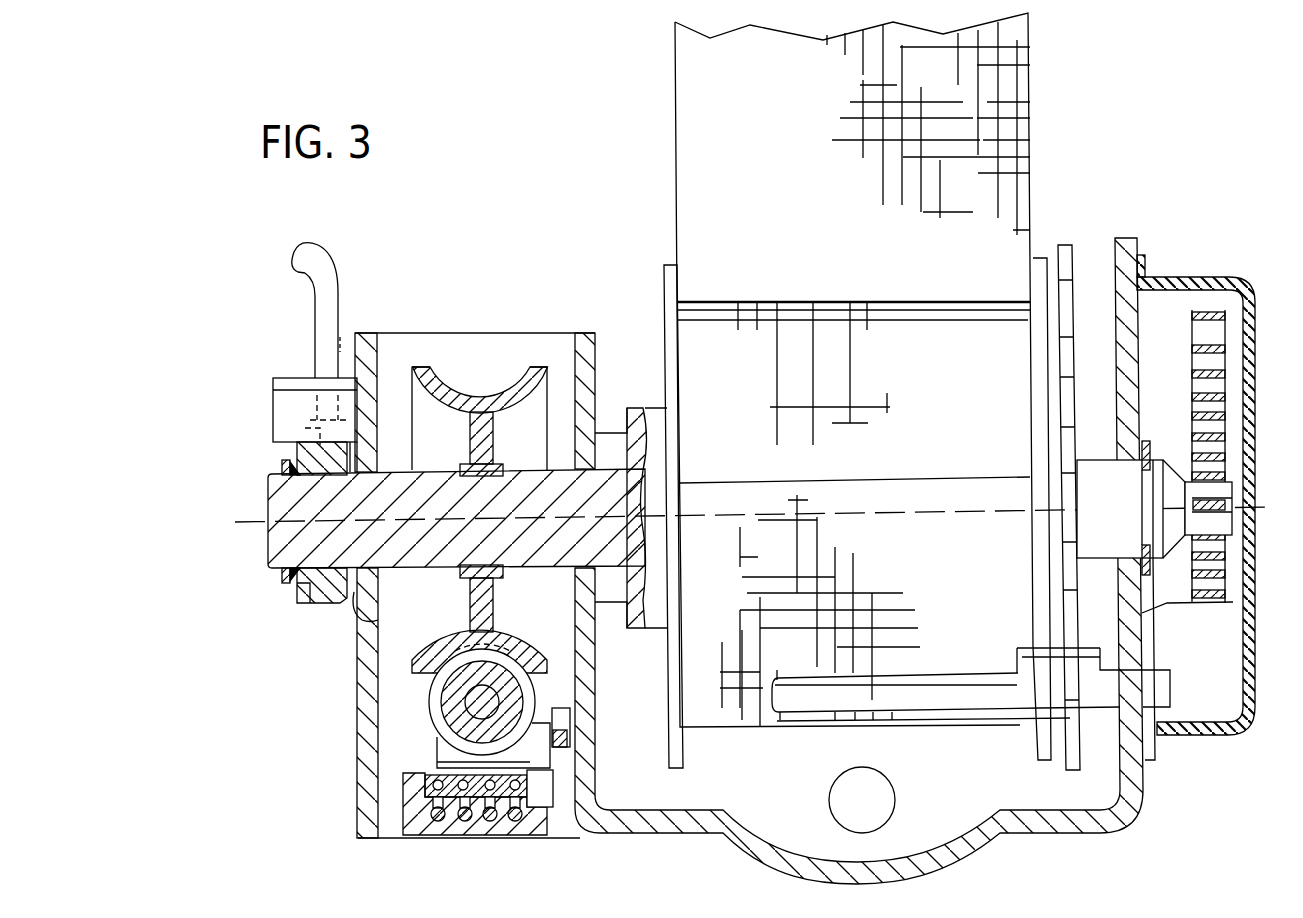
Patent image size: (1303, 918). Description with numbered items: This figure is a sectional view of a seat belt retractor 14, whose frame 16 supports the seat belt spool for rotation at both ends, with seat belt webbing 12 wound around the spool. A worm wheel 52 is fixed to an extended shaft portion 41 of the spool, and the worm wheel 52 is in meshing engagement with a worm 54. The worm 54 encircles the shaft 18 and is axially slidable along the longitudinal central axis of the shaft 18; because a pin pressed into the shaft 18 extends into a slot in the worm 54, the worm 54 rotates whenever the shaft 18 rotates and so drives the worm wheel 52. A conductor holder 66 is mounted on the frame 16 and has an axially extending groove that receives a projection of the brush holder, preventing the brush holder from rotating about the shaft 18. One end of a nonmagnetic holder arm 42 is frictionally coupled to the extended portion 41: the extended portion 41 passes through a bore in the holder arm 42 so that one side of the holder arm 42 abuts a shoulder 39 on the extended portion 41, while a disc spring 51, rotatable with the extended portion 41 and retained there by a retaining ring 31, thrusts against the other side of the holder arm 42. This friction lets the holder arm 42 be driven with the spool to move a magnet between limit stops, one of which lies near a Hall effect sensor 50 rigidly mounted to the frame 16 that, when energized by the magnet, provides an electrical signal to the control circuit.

The seat belt webbing 12 is at (987, 100).
The seat belt retractor 14 is at (488, 133).
The frame 16 is at (747, 835).
The shaft 18 is at (460, 722).
The retaining ring 31 is at (283, 580).
The shoulder 39 is at (365, 612).
The extended shaft portion 41 is at (430, 532).
The holder arm 42 is at (323, 583).
The Hall effect sensor 50 is at (303, 423).
The disc spring 51 is at (310, 603).
The worm wheel 52 is at (477, 393).
The worm 54 is at (435, 707).
The conductor holder 66 is at (543, 820).